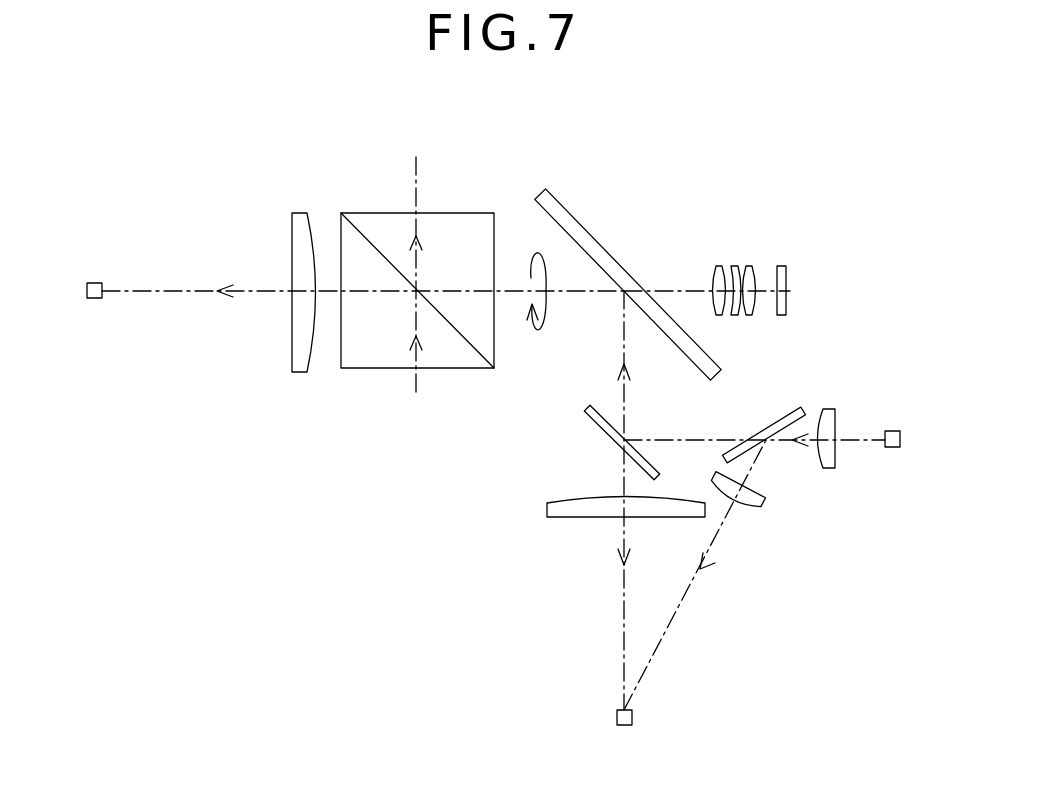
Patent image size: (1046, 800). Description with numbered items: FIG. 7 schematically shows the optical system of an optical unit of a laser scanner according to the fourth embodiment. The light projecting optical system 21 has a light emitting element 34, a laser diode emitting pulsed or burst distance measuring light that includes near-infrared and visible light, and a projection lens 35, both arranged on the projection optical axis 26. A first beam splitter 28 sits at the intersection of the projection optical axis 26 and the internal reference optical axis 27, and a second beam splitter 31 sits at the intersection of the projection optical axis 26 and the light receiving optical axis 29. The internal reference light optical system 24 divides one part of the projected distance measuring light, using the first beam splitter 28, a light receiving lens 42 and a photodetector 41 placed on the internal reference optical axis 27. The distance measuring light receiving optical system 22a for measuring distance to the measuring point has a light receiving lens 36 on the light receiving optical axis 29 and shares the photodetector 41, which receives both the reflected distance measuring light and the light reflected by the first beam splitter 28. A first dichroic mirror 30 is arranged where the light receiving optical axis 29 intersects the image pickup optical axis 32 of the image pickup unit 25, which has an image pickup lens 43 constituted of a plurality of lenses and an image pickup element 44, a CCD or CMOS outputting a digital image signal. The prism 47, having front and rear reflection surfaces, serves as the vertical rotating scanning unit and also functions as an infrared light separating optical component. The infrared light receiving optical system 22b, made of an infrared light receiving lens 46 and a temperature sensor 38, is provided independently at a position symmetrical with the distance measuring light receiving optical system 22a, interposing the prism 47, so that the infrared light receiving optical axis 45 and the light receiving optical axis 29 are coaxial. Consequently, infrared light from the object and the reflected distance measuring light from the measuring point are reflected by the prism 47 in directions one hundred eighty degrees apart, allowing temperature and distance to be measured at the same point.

The light projecting optical system 21 is at (858, 455).
The distance measuring light receiving optical system 22a is at (600, 652).
The infrared light receiving optical system 22b is at (158, 267).
The internal reference light optical system 24 is at (682, 638).
The image pickup unit 25 is at (773, 250).
The projection optical axis 26 is at (862, 437).
The internal reference optical axis 27 is at (689, 590).
The first beam splitter 28 is at (780, 420).
The light receiving optical axis 29 is at (622, 604).
The first dichroic mirror 30 is at (600, 247).
The second beam splitter 31 is at (600, 428).
The image pickup optical axis 32 is at (673, 289).
The light emitting element 34 is at (892, 430).
The projection lens 35 is at (831, 408).
The light receiving lens 36 is at (563, 517).
The temperature sensor 38 is at (95, 300).
The photodetector 41 is at (617, 715).
The light receiving lens 42 is at (750, 508).
The image pickup lens 43 is at (735, 262).
The image pickup element 44 is at (787, 278).
The infrared light receiving optical axis 45 is at (188, 293).
The infrared light receiving lens 46 is at (290, 345).
The prism 47 is at (376, 212).